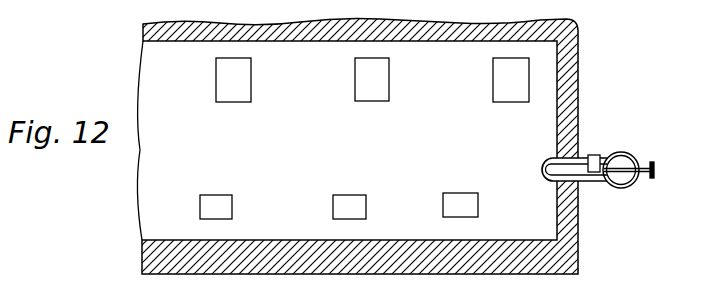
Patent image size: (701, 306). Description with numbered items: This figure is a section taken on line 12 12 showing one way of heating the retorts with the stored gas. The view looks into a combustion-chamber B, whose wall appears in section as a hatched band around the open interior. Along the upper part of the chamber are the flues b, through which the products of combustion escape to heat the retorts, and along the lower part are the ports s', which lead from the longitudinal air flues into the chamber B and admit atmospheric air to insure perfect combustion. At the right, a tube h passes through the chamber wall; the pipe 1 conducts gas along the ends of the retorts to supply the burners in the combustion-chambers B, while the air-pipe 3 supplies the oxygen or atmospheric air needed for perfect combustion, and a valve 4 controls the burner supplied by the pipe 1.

The casing wall 12 is at (411, 4).
The combustion-chamber B is at (350, 140).
The flue b is at (372, 80).
The port s' is at (358, 205).
The tube h is at (589, 183).
The air-pipe 3 is at (596, 156).
The pipe 1 is at (631, 186).
The valve 4 is at (640, 167).